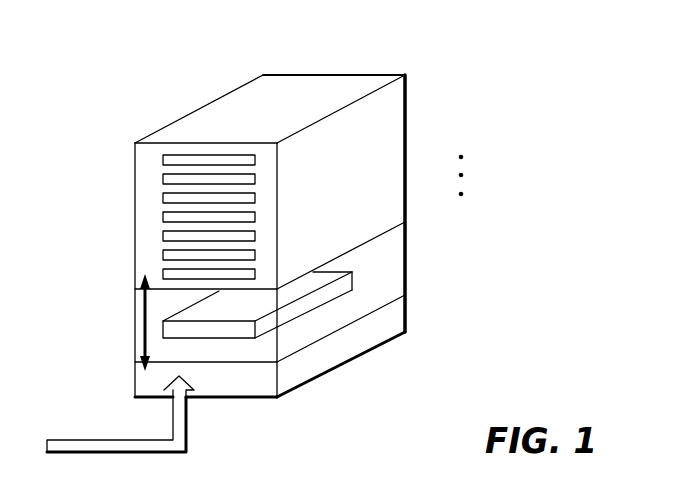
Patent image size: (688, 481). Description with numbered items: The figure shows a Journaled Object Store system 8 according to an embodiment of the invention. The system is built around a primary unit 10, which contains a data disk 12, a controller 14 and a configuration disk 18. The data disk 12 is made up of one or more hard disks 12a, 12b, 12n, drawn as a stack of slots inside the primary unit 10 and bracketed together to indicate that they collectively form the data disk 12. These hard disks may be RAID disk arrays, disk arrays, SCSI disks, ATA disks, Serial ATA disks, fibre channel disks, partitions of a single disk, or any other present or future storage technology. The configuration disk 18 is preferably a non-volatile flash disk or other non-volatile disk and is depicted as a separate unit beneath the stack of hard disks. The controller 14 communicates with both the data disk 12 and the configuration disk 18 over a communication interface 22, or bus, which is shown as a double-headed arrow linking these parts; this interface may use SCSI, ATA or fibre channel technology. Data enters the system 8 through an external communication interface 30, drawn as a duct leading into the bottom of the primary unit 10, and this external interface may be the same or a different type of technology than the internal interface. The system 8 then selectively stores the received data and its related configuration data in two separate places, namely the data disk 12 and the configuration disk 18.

The JOS system 8 is at (450, 73).
The primary unit 10 is at (144, 118).
The data disk 12 is at (161, 282).
The hard disk 12a is at (255, 160).
The hard disk 12b is at (255, 180).
The hard disk 12n is at (255, 276).
The controller 14 is at (124, 385).
The configuration disk 18 is at (318, 297).
The communication interface 22 is at (157, 327).
The external communication interface 30 is at (98, 439).